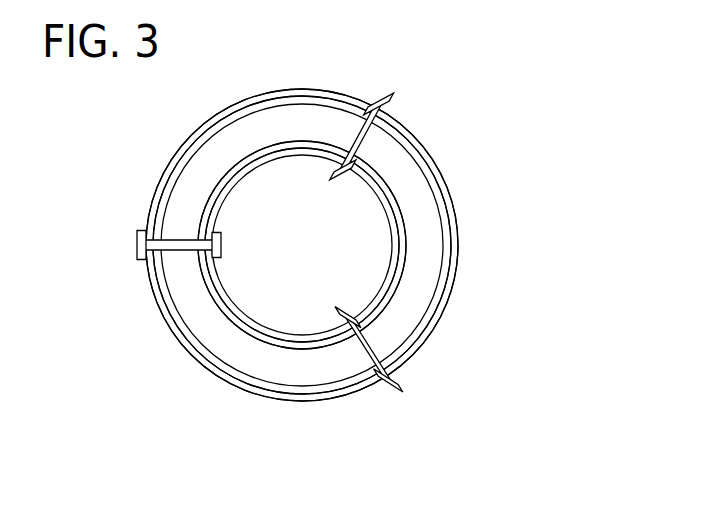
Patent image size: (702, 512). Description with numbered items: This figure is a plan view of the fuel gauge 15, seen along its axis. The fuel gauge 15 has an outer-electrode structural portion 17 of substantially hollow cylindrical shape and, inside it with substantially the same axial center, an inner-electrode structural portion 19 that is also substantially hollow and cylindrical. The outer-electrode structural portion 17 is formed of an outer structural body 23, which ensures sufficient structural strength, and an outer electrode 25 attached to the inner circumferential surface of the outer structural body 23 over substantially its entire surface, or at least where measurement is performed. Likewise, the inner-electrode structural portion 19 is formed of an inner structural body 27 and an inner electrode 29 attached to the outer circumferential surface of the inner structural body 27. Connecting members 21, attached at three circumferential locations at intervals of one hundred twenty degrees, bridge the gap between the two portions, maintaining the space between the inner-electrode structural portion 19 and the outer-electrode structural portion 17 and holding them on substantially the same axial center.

The fuel gauge 15 is at (541, 124).
The outer-electrode structural portion 17 is at (462, 248).
The inner-electrode structural portion 19 is at (391, 266).
The connecting members 21 is at (395, 390).
The outer structural body 23 is at (452, 198).
The outer electrode 25 is at (413, 135).
The inner structural body 27 is at (392, 216).
The inner electrode 29 is at (397, 271).